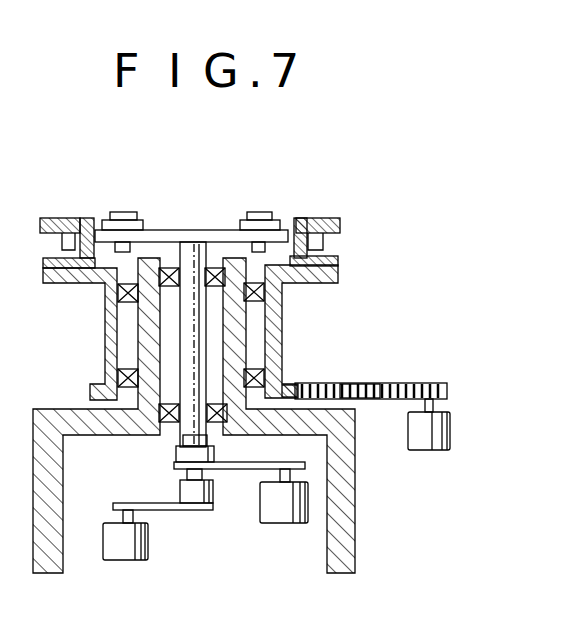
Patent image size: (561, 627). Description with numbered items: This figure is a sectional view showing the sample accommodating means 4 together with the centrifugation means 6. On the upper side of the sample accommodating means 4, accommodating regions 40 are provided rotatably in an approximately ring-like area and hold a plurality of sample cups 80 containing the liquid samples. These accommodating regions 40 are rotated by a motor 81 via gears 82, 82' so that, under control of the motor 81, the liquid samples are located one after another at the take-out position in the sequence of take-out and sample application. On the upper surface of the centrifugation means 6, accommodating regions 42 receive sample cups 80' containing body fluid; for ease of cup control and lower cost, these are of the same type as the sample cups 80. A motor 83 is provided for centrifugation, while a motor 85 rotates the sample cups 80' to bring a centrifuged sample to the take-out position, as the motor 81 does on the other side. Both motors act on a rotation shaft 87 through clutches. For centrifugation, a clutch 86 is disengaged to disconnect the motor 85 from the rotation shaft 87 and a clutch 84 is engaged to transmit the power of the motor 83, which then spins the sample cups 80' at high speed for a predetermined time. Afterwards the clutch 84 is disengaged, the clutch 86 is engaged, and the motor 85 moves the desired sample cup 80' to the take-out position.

The sample accommodating means 4 is at (370, 228).
The centrifugation means 6 is at (205, 214).
The accommodating regions 40 is at (91, 219).
The accommodating regions 42 is at (140, 218).
The sample cups 80 is at (199, 201).
The sample cups 80' is at (216, 204).
The motor 81 is at (451, 437).
The gear 82 is at (394, 364).
The gear 82' is at (376, 363).
The motor 83 is at (128, 548).
The clutch 84 is at (193, 496).
The motor 85 is at (295, 523).
The clutch 86 is at (176, 450).
The rotation shaft 87 is at (272, 322).